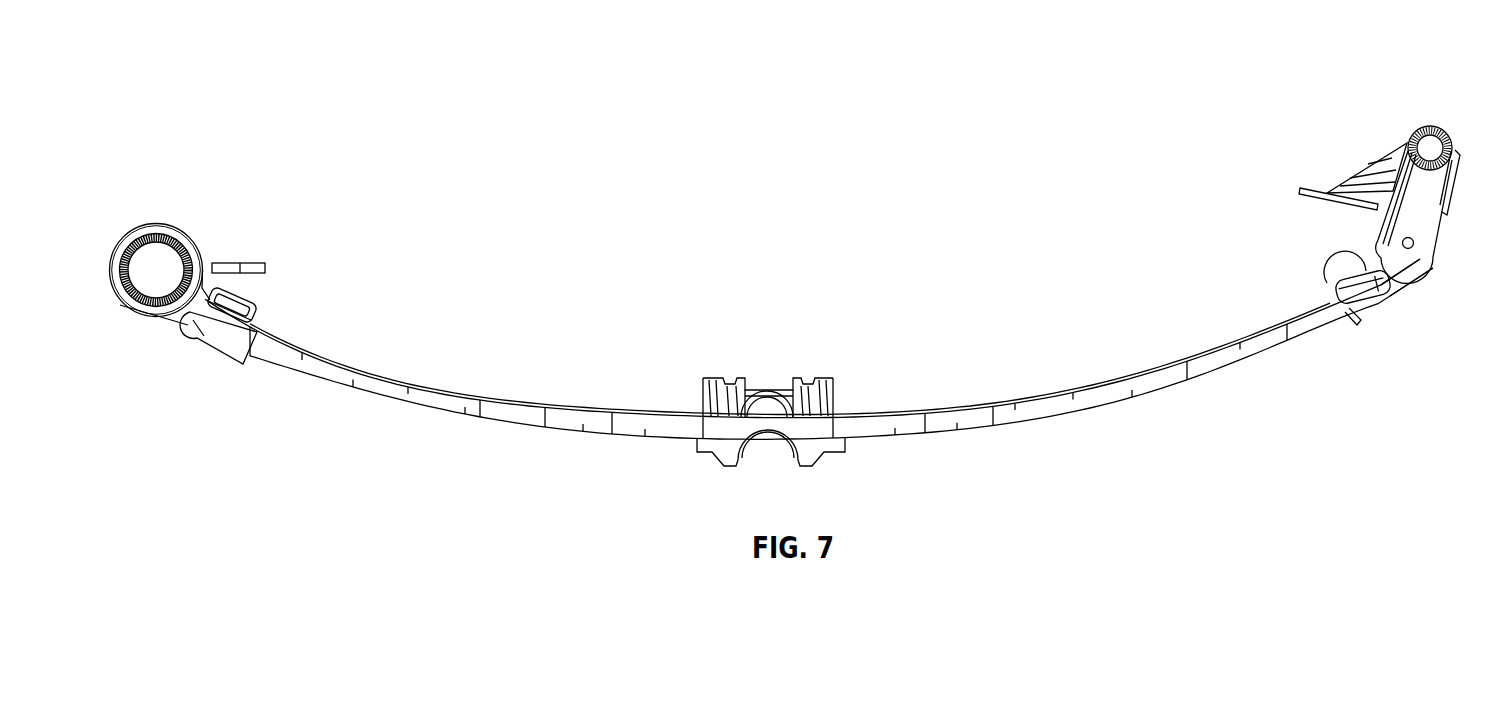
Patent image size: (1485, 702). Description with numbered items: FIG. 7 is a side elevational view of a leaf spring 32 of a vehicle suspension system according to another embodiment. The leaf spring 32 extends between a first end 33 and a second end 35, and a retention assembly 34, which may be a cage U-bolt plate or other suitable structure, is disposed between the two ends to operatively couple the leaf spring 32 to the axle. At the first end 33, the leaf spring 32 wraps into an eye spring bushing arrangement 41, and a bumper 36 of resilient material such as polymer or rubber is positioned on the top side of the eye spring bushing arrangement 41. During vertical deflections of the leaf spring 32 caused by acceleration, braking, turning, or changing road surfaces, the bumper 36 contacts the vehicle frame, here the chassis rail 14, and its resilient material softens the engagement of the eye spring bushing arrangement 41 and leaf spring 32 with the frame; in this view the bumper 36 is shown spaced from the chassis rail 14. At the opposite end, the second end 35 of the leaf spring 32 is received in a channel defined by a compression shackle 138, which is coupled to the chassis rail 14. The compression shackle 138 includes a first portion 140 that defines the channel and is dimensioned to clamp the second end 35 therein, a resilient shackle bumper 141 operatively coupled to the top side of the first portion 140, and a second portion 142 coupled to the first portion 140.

The chassis rail 14 is at (258, 262).
The leaf spring 32 is at (497, 421).
The first end 33 is at (185, 325).
The retention assembly 34 is at (807, 376).
The second end 35 is at (1403, 268).
The bumper 36 is at (253, 299).
The eye spring bushing arrangement 41 is at (157, 226).
The compression shackle 138 is at (1400, 133).
The first portion 140 is at (1364, 314).
The shackle bumper 141 is at (1346, 265).
The second portion 142 is at (1357, 180).